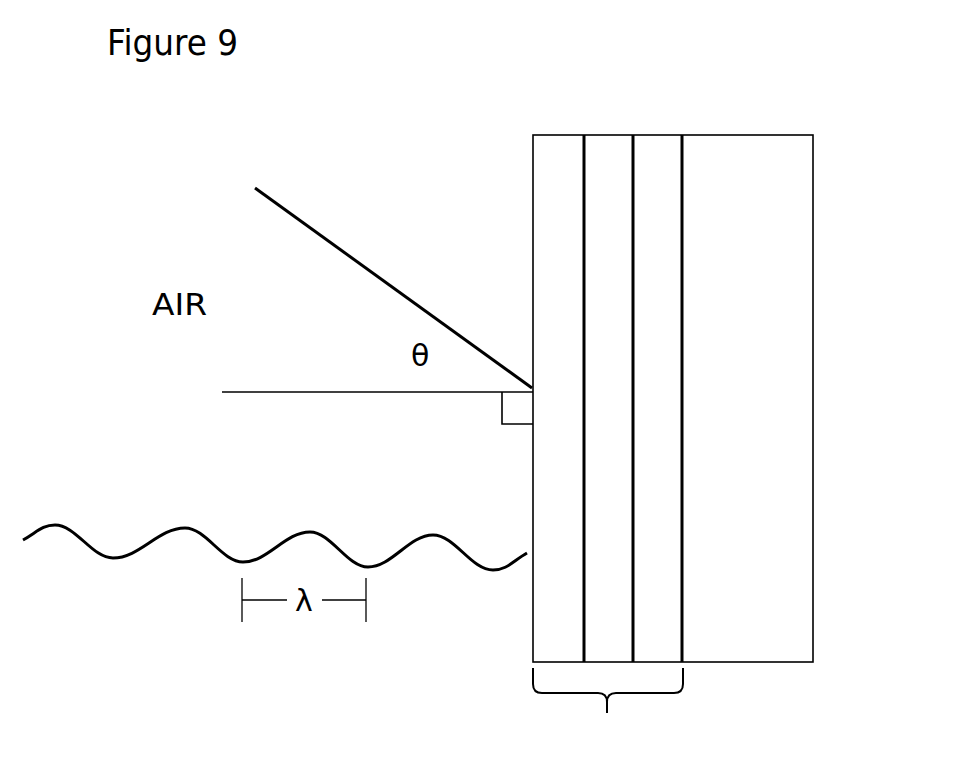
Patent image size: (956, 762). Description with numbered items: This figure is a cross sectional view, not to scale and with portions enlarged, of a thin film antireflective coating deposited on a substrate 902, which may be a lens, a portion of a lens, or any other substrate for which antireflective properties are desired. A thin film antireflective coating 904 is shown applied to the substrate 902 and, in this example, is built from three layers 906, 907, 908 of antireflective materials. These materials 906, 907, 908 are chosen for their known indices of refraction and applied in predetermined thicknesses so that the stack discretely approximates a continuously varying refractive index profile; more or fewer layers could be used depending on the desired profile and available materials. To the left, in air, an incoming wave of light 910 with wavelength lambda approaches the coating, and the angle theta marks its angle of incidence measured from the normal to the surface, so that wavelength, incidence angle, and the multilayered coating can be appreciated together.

The substrate 902 is at (790, 298).
The thin film antireflective coating 904 is at (608, 714).
The first layer of antireflective material 906 is at (558, 150).
The second layer of antireflective material 907 is at (610, 150).
The third layer of antireflective material 908 is at (658, 150).
The incident light wave 910 is at (185, 522).